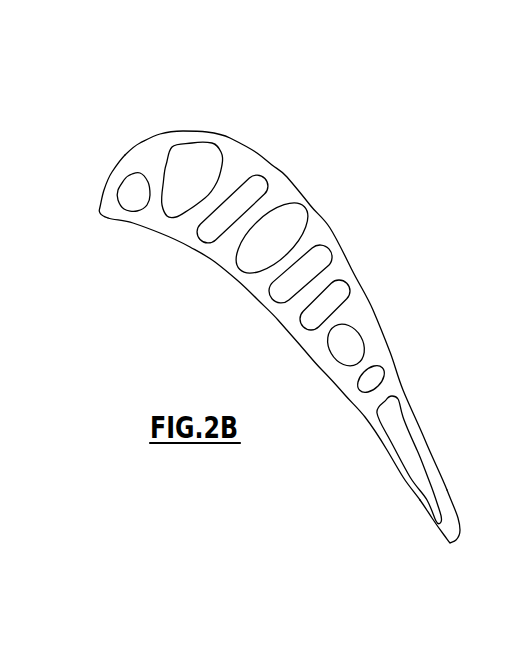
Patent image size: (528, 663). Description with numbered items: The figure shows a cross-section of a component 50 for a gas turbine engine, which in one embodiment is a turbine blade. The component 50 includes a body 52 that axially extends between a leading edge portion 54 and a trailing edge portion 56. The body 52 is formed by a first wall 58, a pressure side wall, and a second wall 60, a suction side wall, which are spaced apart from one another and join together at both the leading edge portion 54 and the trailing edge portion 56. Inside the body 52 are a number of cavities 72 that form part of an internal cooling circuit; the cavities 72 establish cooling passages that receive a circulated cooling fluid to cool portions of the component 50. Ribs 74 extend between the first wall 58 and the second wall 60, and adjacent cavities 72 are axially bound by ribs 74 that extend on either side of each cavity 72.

The component 50 is at (248, 122).
The body 52 is at (294, 171).
The leading edge portion 54 is at (113, 175).
The trailing edge portion 56 is at (450, 543).
The first wall 58 is at (268, 311).
The second wall 60 is at (331, 226).
The cavities 72 is at (220, 223).
The ribs 74 is at (334, 274).